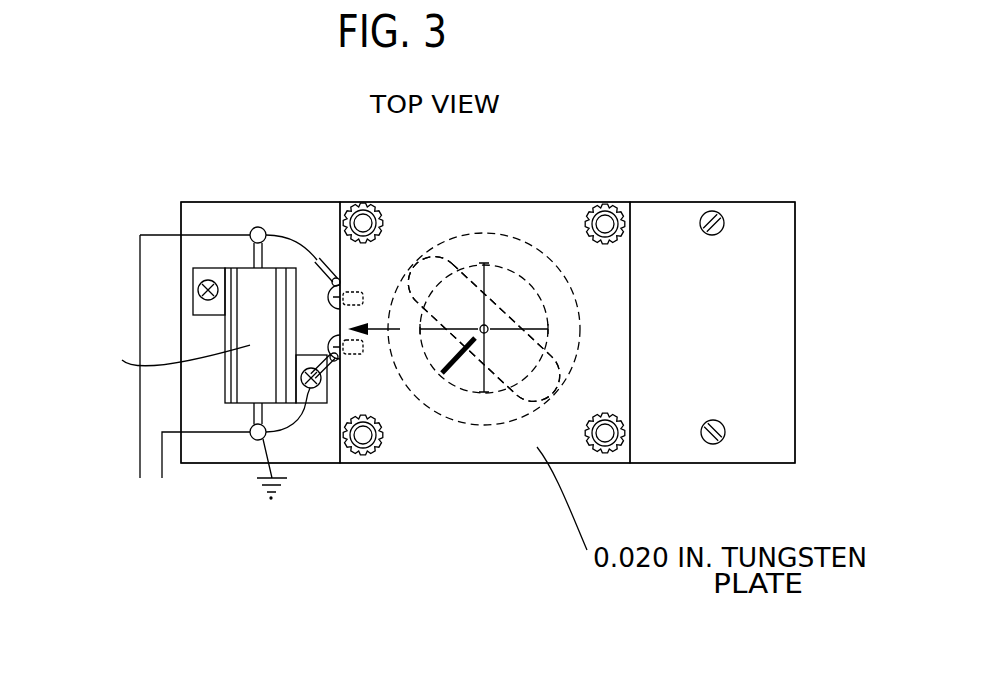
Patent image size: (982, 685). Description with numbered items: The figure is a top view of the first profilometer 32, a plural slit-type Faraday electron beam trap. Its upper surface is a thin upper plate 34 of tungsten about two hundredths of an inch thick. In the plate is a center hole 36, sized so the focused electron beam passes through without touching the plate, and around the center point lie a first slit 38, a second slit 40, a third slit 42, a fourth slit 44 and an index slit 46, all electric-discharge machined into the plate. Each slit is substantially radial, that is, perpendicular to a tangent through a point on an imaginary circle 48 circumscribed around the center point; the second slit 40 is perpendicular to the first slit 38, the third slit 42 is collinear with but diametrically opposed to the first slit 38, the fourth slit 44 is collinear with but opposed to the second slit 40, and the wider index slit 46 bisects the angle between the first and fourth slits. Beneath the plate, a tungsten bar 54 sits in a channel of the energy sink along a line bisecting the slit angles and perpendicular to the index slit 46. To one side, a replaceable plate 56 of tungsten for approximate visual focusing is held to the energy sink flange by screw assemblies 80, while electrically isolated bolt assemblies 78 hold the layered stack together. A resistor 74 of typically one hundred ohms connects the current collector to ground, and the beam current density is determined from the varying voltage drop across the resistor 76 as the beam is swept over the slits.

The first profilometer 32 is at (403, 487).
The upper plate 34 is at (507, 215).
The center hole 36 is at (490, 325).
The first slit 38 is at (487, 398).
The second slit 40 is at (535, 329).
The third slit 42 is at (487, 248).
The fourth slit 44 is at (420, 327).
The index slit 46 is at (450, 355).
The imaginary circle 48 is at (521, 229).
The bar 54 is at (548, 403).
The replaceable plate 56 is at (780, 353).
The resistor 74 is at (307, 223).
The resistor 76 is at (253, 287).
The bolt assemblies 78 is at (362, 215).
The screw assemblies 80 is at (713, 217).